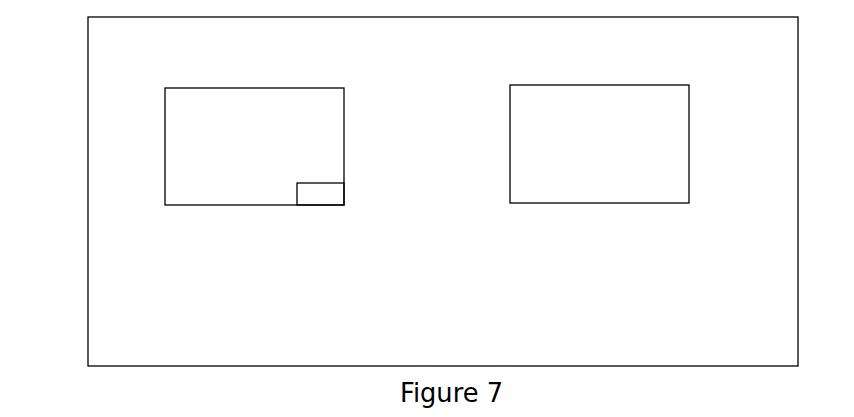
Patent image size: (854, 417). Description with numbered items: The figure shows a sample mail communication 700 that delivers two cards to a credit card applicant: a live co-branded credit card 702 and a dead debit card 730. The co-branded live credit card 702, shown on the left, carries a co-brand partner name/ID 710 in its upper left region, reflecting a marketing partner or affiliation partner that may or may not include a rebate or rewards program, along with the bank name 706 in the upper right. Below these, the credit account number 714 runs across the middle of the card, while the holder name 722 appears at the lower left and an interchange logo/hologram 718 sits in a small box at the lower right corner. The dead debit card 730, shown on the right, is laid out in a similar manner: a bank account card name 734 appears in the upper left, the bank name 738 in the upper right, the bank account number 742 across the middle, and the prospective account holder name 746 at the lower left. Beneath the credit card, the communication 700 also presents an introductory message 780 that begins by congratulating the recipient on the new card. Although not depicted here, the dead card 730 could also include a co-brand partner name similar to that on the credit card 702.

The display screen / user interface 700 is at (88, 49).
The co-branded credit card 702 is at (252, 88).
The bank name 706 is at (330, 101).
The co-brand partner name/ID 710 is at (178, 103).
The credit account number 714 is at (330, 147).
The interchange logo/hologram 718 is at (330, 201).
The holder name 722 is at (170, 200).
The dead debit card 730 is at (597, 85).
The bank account card name 734 is at (523, 88).
The bank name 738 is at (673, 92).
The bank account number 742 is at (677, 139).
The account holder name 746 is at (517, 192).
The congratulatory message text 780 is at (170, 276).